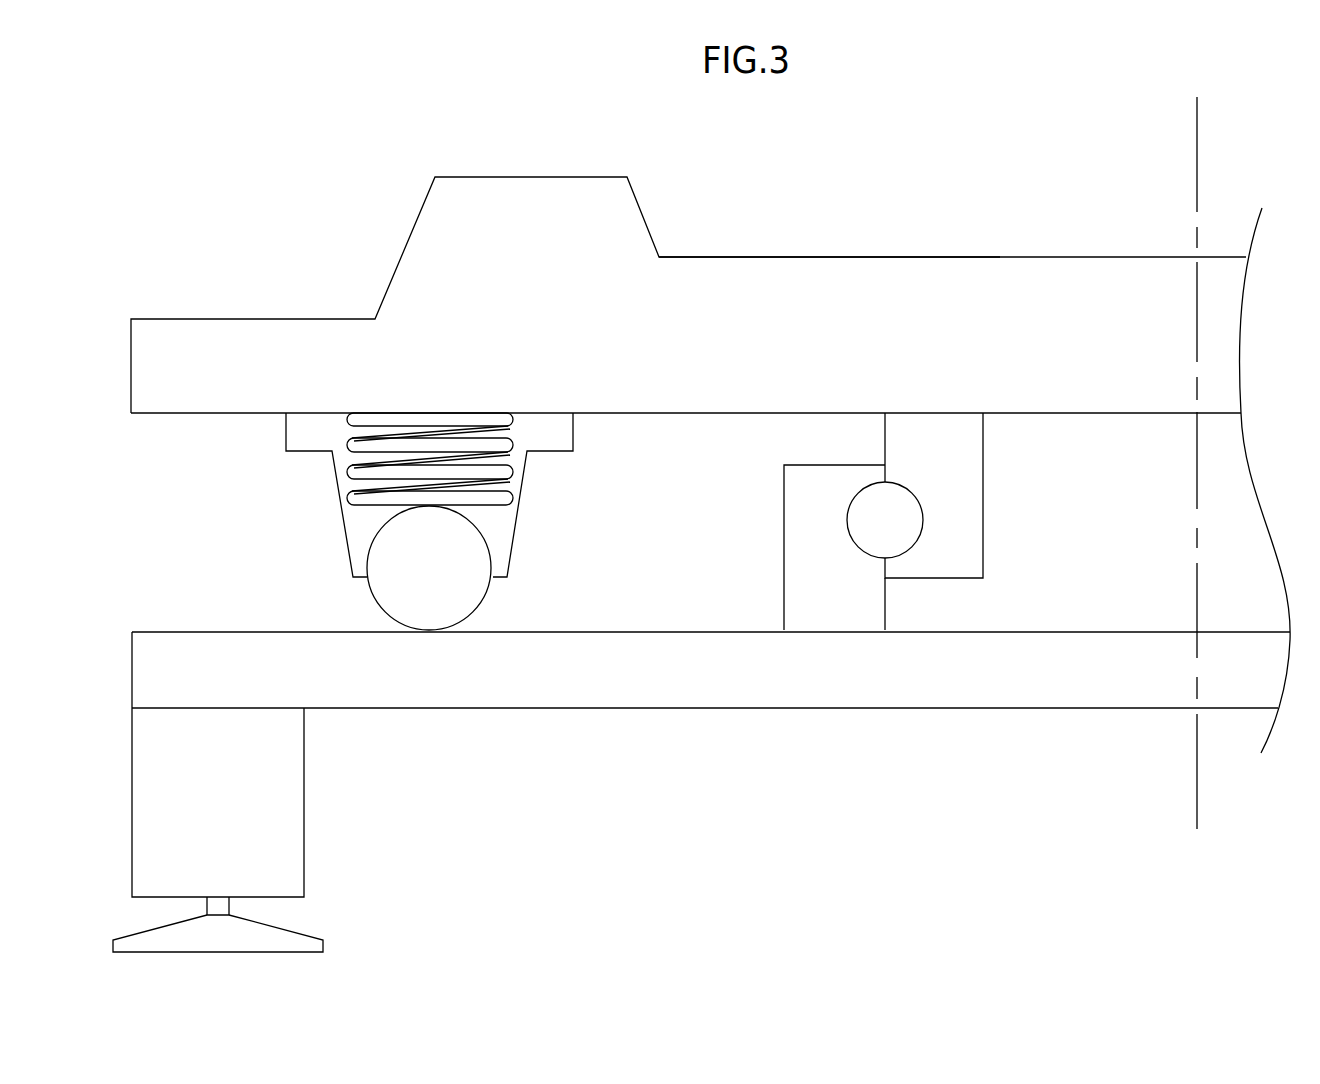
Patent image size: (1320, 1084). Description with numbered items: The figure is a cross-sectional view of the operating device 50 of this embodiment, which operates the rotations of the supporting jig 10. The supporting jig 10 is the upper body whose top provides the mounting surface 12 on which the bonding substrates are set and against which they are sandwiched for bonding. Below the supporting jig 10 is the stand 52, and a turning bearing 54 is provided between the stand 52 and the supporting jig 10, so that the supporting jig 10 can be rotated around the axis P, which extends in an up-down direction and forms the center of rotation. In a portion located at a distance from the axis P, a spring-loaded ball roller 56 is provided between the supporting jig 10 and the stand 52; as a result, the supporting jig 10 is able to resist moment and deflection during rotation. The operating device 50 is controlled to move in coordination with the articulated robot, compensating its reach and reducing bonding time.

The supporting jig 10 is at (1025, 254).
The mounting surface 12 is at (873, 256).
The axis P is at (1198, 147).
The operating device 50 is at (701, 682).
The stand 52 is at (385, 709).
The turning bearing 54 is at (983, 496).
The spring-loaded ball roller 56 is at (341, 520).